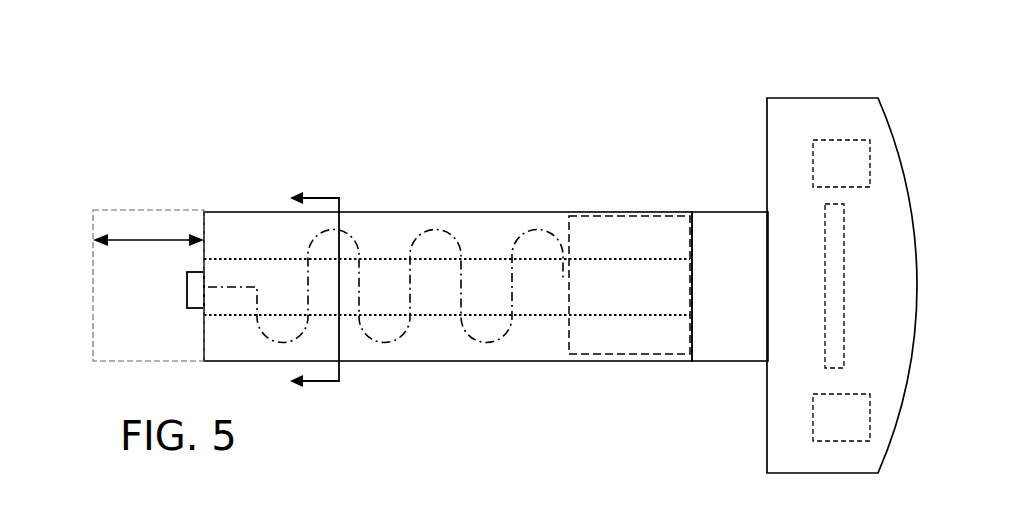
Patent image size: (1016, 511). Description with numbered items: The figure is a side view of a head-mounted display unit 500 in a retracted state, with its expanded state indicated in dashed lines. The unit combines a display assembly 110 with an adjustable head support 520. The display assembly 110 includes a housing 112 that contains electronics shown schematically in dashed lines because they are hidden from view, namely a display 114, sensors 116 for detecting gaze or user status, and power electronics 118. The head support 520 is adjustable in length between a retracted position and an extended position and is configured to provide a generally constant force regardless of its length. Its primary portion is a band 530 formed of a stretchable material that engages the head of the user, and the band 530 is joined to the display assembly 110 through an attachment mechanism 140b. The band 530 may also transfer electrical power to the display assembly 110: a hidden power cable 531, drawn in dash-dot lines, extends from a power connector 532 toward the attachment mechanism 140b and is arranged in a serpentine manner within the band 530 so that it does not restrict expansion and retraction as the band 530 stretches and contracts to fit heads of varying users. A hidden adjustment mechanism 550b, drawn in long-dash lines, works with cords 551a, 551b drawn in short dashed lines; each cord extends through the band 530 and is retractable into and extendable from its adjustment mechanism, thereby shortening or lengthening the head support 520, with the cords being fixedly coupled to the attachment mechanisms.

The head-mounted display unit 500 is at (208, 110).
The head support 520 is at (496, 154).
The band 530 is at (377, 361).
The power cable 531 is at (273, 342).
The power connector 532 is at (187, 290).
The adjustment mechanism 550b is at (623, 354).
The cord 551a is at (386, 259).
The cord 551b is at (540, 315).
The attachment mechanism 140b is at (728, 361).
The display assembly 110 is at (850, 42).
The housing 112 is at (767, 145).
The display 114 is at (825, 276).
The sensors 116 is at (841, 163).
The power electronics 118 is at (841, 417).